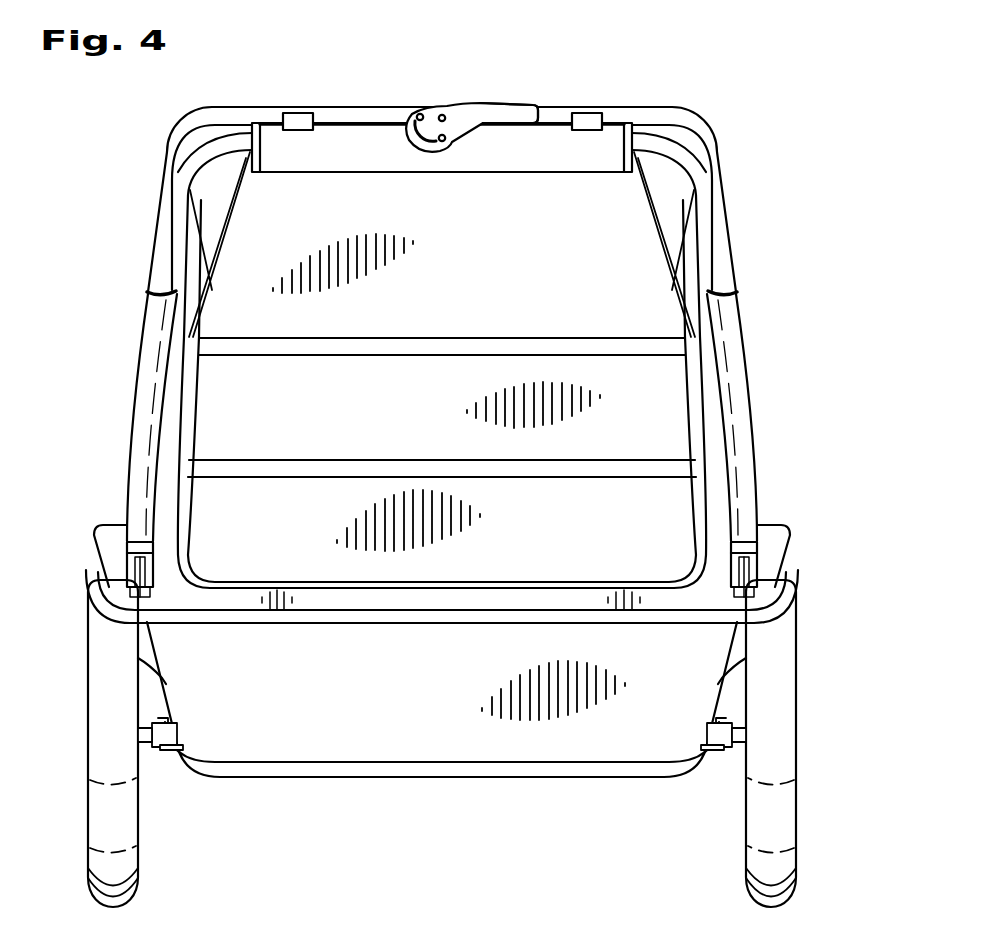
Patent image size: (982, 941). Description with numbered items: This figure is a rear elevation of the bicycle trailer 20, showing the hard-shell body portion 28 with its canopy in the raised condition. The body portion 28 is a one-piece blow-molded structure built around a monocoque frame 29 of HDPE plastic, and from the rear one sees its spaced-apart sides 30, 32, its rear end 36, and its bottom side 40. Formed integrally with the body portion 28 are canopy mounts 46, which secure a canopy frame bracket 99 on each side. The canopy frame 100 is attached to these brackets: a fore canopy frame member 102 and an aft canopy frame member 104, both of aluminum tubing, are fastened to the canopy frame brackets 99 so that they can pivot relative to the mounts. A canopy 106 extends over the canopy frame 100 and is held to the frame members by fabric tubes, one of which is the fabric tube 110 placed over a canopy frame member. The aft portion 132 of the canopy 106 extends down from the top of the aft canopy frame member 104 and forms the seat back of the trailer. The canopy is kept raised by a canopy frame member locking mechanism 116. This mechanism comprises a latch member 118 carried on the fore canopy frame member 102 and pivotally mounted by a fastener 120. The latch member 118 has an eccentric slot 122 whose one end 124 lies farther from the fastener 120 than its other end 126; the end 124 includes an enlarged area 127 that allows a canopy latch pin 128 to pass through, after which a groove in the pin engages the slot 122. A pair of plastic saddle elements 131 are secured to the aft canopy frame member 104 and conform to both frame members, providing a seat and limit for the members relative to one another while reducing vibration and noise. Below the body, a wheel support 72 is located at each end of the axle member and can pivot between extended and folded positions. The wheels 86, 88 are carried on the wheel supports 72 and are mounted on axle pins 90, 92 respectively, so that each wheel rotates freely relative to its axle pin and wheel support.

The bicycle trailer 20 is at (62, 275).
The canopy frame 100 is at (758, 76).
The fore canopy frame member 102 is at (717, 140).
The aft canopy frame member 104 is at (730, 247).
The canopy 106 is at (135, 400).
The fabric tube 110 is at (747, 347).
The canopy frame member locking mechanism 116 is at (456, 75).
The latch member 118 is at (500, 105).
The fastener 120 is at (440, 112).
The slot 122 is at (418, 133).
The slot end 124 is at (415, 112).
The slot end 126 is at (436, 150).
The enlarged area 127 is at (410, 124).
The canopy latch pin 128 is at (453, 142).
The saddle elements 131 is at (290, 113).
The aft portion of canopy 132 is at (510, 283).
The side 30 is at (97, 528).
The side 32 is at (790, 530).
The canopy mounts 46 is at (150, 595).
The canopy frame bracket 99 is at (130, 578).
The wheel 86 is at (88, 750).
The wheel 88 is at (800, 823).
The rear end 36 is at (426, 718).
The bottom side 40 is at (380, 777).
The monocoque frame 29 is at (490, 747).
The hard-shell body portion 28 is at (552, 742).
The axle pin 90 is at (137, 727).
The axle pin 92 is at (752, 728).
The wheel support 72 is at (165, 752).